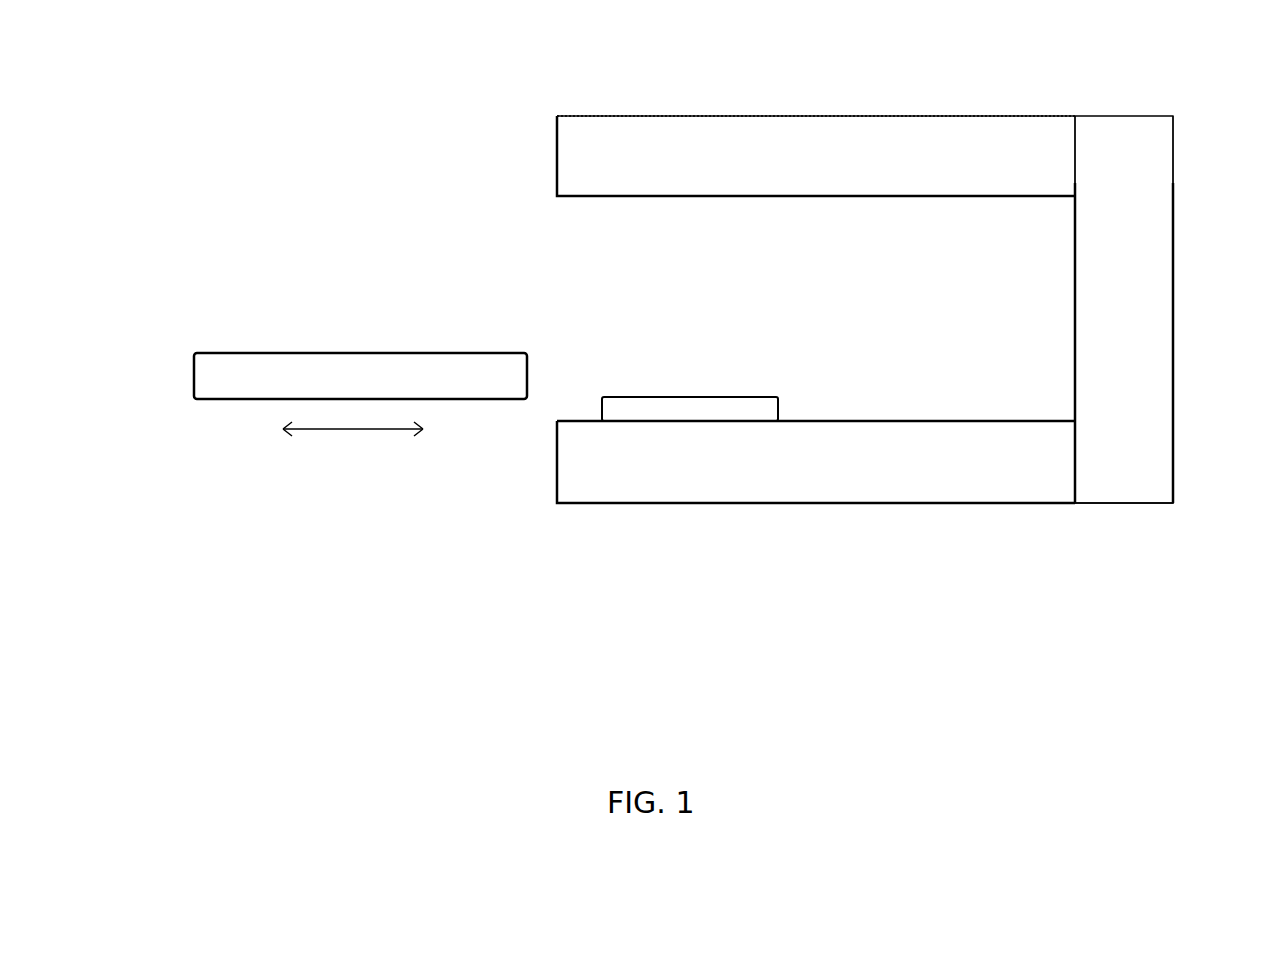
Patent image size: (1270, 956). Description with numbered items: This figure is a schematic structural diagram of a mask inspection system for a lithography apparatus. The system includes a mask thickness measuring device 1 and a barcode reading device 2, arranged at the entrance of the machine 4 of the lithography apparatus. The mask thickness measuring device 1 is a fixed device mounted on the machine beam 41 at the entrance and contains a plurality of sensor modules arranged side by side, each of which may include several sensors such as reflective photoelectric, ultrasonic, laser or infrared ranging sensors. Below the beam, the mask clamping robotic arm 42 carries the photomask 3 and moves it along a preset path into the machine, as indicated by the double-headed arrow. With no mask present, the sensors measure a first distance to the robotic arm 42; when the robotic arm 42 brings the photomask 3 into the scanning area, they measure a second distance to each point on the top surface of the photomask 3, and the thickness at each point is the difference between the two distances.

The mask thickness measuring device 1 is at (633, 155).
The barcode reading device 2 is at (671, 397).
The photomask 3 is at (245, 367).
The machine 4 is at (1172, 290).
The machine beam 41 is at (633, 155).
The mask clamping robotic arm 42 is at (953, 474).